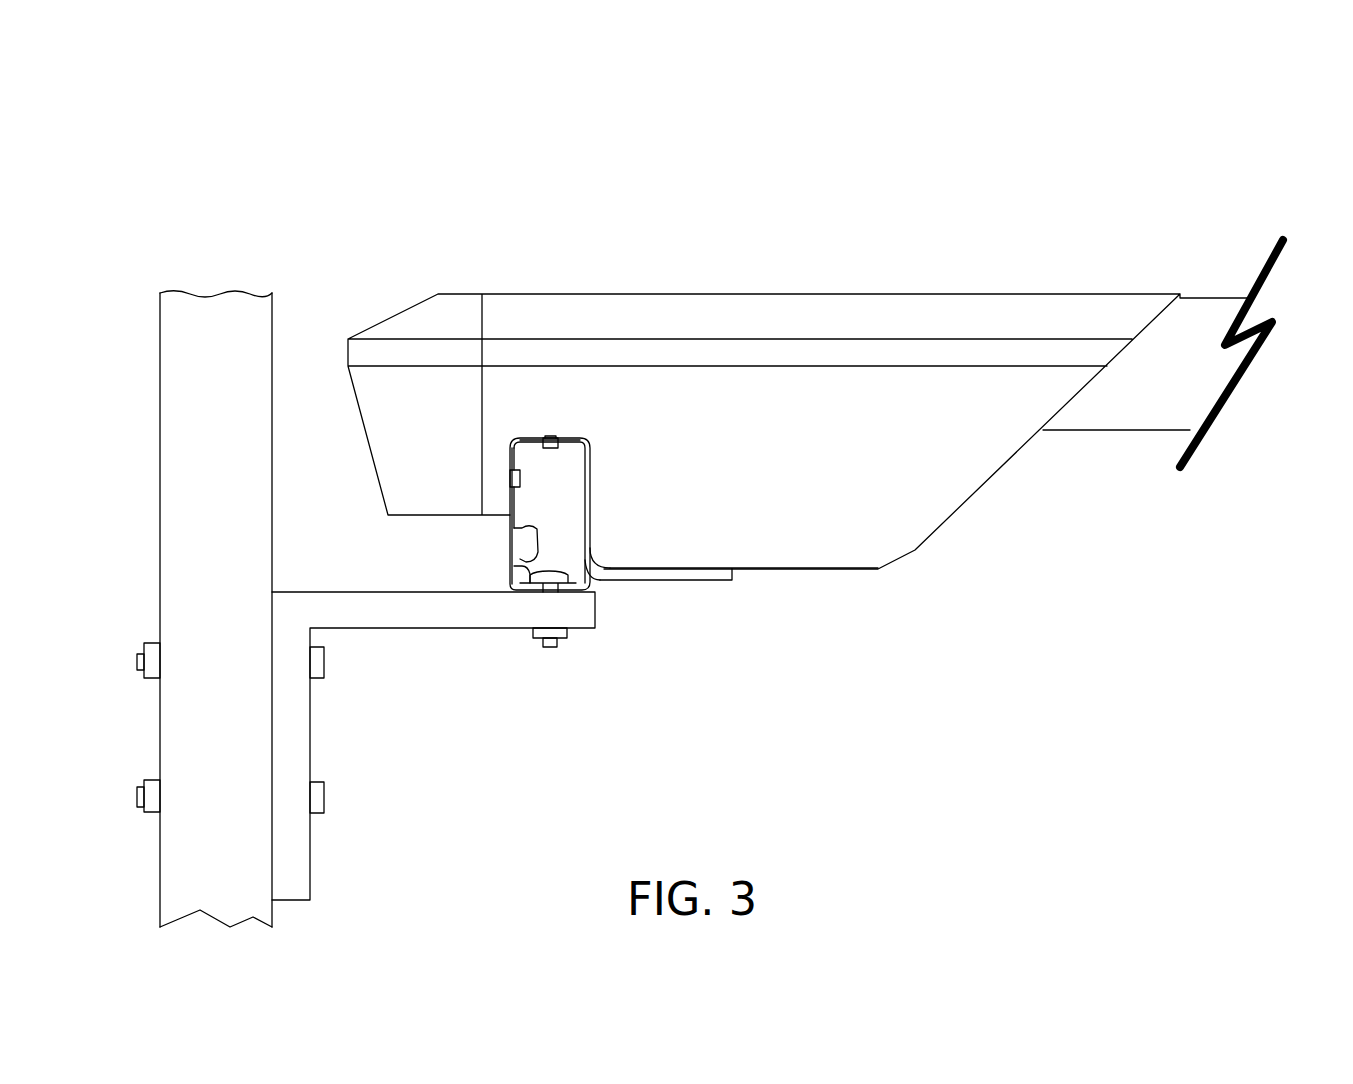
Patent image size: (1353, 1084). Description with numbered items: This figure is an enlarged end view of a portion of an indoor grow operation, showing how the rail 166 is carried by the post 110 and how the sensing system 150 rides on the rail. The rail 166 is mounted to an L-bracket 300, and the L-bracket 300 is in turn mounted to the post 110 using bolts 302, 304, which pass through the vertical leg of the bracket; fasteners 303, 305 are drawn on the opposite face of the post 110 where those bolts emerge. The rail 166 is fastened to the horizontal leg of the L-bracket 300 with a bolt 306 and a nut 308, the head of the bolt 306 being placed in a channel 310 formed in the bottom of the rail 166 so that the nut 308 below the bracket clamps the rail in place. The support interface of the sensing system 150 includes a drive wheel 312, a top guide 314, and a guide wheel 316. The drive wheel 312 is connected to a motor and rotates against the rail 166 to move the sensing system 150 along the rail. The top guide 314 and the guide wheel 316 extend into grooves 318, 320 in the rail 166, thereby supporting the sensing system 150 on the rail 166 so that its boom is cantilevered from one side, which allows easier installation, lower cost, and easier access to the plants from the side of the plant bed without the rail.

The sensing system 150 is at (553, 172).
The post 110 is at (232, 305).
The rail 166 is at (567, 447).
The top guide 314 is at (551, 438).
The groove 318 is at (572, 448).
The groove 320 is at (545, 480).
The guide wheel 316 is at (522, 481).
The channel 310 is at (567, 577).
The bolt 306 is at (590, 583).
The drive wheel 312 is at (735, 579).
The L-bracket 300 is at (402, 624).
The bolt 302 is at (324, 672).
The bolt 304 is at (324, 805).
The fastener 303 is at (153, 645).
The fastener 305 is at (153, 780).
The nut 308 is at (547, 648).